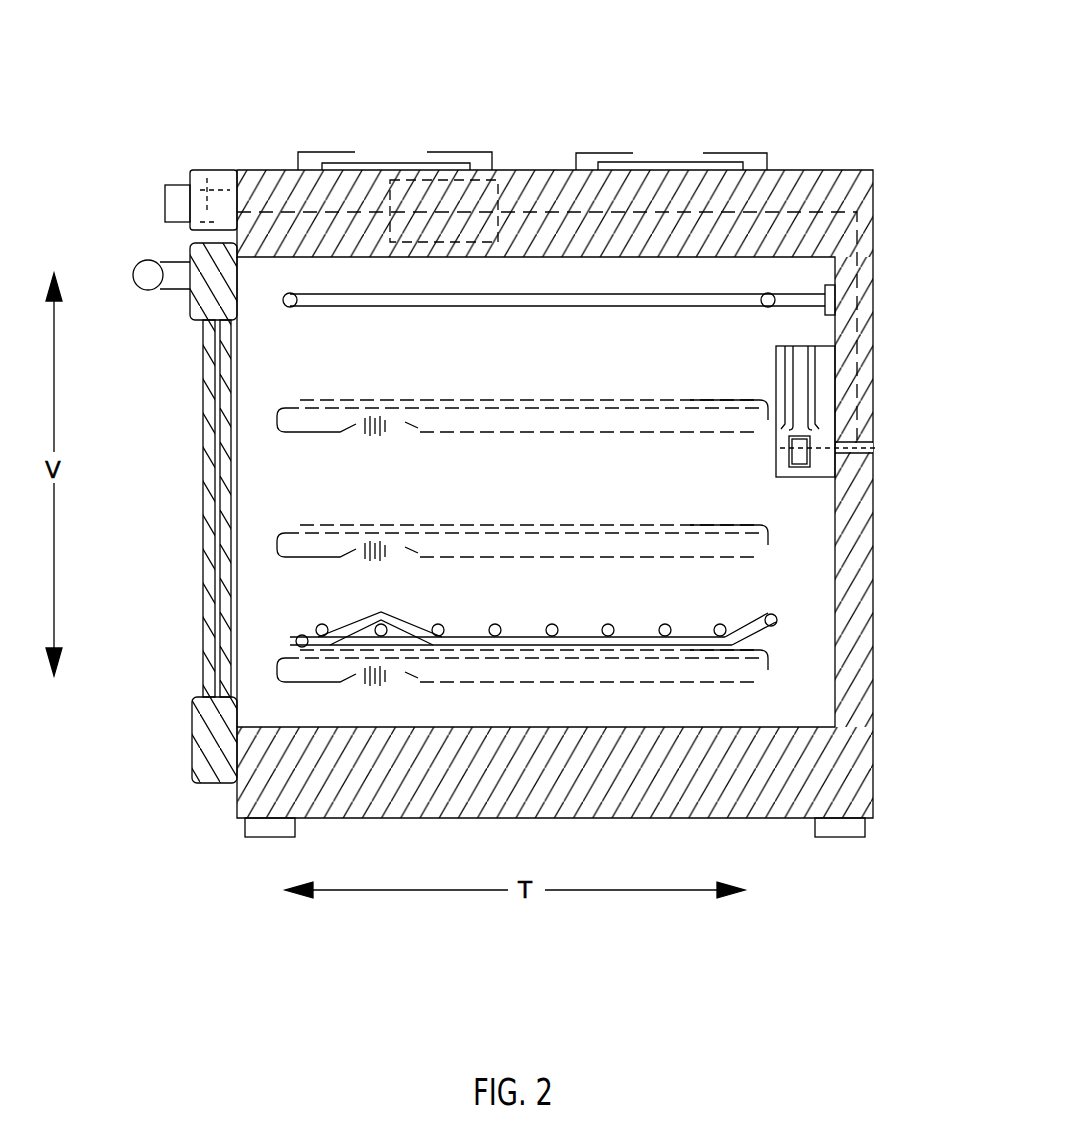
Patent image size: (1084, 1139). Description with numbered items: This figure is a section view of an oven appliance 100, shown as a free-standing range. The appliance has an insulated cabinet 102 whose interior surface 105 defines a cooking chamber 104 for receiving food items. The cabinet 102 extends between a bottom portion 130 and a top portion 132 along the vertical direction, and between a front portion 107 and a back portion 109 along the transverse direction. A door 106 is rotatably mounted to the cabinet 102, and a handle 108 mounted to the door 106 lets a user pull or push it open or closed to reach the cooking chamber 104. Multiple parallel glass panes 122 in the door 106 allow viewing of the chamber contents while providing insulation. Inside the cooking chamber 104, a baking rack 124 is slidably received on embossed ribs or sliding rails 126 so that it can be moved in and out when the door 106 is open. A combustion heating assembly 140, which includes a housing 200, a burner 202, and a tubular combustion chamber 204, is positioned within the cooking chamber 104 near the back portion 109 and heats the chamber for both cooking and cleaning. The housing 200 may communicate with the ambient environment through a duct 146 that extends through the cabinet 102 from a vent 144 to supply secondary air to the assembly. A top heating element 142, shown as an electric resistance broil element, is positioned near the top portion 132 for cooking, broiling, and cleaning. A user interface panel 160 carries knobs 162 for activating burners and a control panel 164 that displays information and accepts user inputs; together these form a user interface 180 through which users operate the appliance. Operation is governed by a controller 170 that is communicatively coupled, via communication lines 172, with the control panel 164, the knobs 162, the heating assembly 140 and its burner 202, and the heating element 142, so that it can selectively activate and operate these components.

The oven appliance 100 is at (910, 165).
The cabinet 102 is at (868, 392).
The cooking chamber 104 is at (803, 545).
The interior surface 105 is at (586, 277).
The door 106 is at (192, 297).
The front portion 107 is at (236, 876).
The handle 108 is at (150, 268).
The back portion 109 is at (868, 876).
The glass panes 122 is at (207, 540).
The baking rack 124 is at (356, 624).
The sliding rails 126 is at (770, 662).
The bottom portion 130 is at (156, 816).
The top portion 132 is at (120, 140).
The combustion heating assembly 140 is at (746, 451).
The top heating element 142 is at (797, 329).
The vent 144 is at (903, 447).
The duct 146 is at (855, 456).
The user interface panel 160 is at (125, 208).
The knobs 162 is at (175, 185).
The control panel 164 is at (228, 188).
The controller 170 is at (422, 152).
The communication lines 172 is at (877, 212).
The user interface 180 is at (187, 69).
The housing 200 is at (790, 466).
The burner 202 is at (800, 466).
The tubular combustion chamber 204 is at (790, 368).